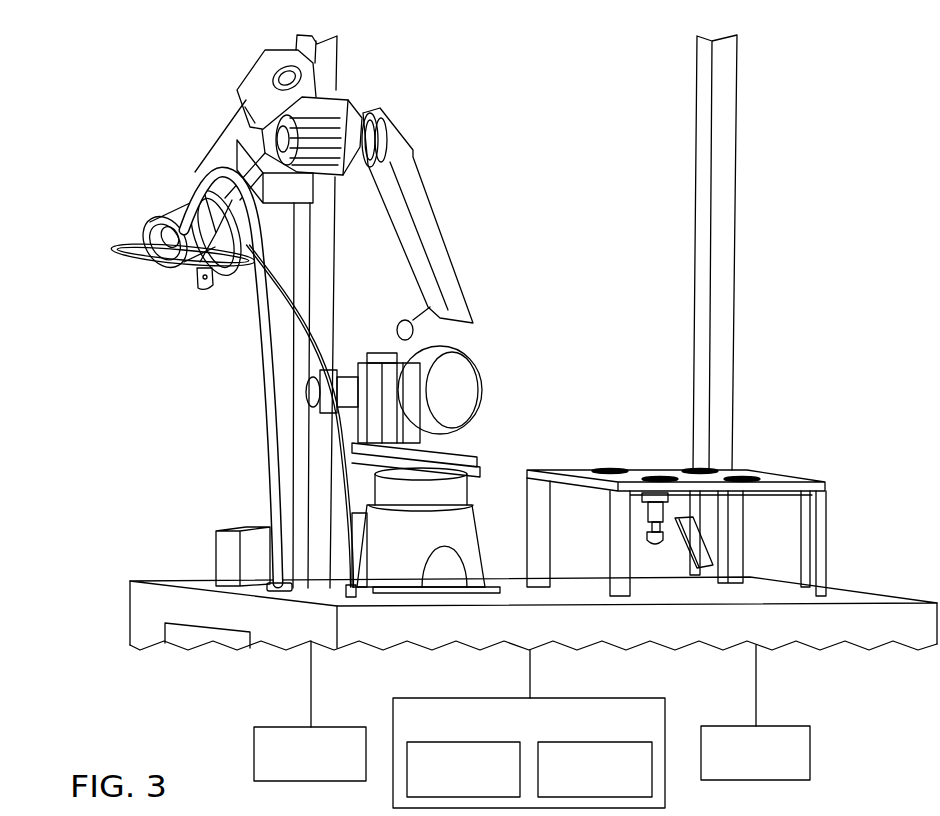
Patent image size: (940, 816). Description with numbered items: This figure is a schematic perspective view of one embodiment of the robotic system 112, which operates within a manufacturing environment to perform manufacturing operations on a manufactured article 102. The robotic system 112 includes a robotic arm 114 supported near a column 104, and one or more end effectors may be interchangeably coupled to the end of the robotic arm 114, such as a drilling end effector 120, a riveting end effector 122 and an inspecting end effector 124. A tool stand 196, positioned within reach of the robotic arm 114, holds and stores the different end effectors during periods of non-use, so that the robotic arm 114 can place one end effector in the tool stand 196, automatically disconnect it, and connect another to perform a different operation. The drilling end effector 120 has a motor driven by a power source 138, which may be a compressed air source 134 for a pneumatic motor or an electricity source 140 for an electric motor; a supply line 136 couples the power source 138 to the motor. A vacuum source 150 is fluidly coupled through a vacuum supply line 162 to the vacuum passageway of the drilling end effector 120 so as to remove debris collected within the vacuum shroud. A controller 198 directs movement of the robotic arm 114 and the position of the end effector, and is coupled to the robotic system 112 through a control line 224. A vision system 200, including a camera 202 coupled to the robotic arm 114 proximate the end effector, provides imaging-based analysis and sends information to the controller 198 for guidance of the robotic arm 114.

The manufactured article 102 is at (827, 118).
The support column 104 is at (337, 66).
The robotic system 112 is at (182, 120).
The robotic arm 114 is at (432, 221).
The drilling end effector 120 is at (127, 222).
The riveting end effector 122 is at (660, 553).
The inspecting end effector 124 is at (707, 573).
The compressed air source 134 is at (595, 742).
The supply line 136 is at (135, 264).
The power source 138 is at (562, 698).
The electricity source 140 is at (465, 742).
The vacuum source 150 is at (254, 753).
The vacuum supply line 162 is at (272, 459).
The tool stand 196 is at (826, 532).
The controller 198 is at (811, 755).
The vision system 200 is at (222, 299).
The camera 202 is at (199, 291).
The control line 224 is at (757, 696).